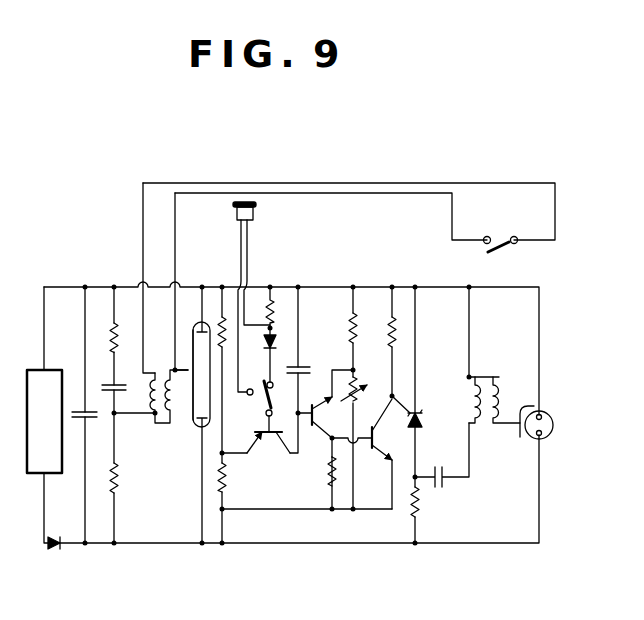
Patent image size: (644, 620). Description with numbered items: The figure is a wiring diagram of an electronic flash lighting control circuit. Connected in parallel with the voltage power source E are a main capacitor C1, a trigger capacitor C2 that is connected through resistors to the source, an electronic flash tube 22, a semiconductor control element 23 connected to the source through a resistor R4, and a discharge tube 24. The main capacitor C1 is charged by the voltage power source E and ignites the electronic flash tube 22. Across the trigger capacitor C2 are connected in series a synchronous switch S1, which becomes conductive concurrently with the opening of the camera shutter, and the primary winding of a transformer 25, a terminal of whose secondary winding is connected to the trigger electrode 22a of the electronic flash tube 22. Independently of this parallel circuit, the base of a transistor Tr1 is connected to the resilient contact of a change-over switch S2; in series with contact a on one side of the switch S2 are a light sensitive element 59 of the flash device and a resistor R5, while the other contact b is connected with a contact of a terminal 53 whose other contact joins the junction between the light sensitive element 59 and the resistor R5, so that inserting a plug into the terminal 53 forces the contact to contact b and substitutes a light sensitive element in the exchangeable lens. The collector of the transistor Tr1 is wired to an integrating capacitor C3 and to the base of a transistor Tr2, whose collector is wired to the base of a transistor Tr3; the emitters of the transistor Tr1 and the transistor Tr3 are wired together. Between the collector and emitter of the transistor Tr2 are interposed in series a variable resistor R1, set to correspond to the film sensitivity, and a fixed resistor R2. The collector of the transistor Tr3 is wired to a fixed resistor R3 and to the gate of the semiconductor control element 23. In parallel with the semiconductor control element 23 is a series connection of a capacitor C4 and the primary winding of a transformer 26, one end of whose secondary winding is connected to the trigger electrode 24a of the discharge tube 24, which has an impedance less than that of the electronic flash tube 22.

The voltage power source E is at (44, 421).
The main capacitor C1 is at (86, 418).
The trigger capacitor C2 is at (112, 386).
The integrating capacitor C3 is at (300, 369).
The capacitor C4 is at (443, 482).
The variable resistor R1 is at (356, 392).
The fixed resistor R2 is at (333, 488).
The fixed resistor R3 is at (391, 331).
The resistor R4 is at (410, 505).
The resistor R5 is at (272, 300).
The synchronous switch S1 is at (498, 247).
The change-over switch S2 is at (262, 409).
The transistor Tr1 is at (278, 450).
The transistor Tr2 is at (320, 441).
The transistor Tr3 is at (378, 452).
The electronic flash tube 22 is at (189, 421).
The trigger electrode 22a is at (188, 370).
The semiconductor control element 23 is at (420, 418).
The discharge tube 24 is at (553, 426).
The trigger electrode 24a is at (541, 415).
The transformer 25 is at (152, 425).
The transformer 26 is at (481, 376).
The terminal 53 is at (253, 212).
The light sensitive element 59 is at (276, 338).